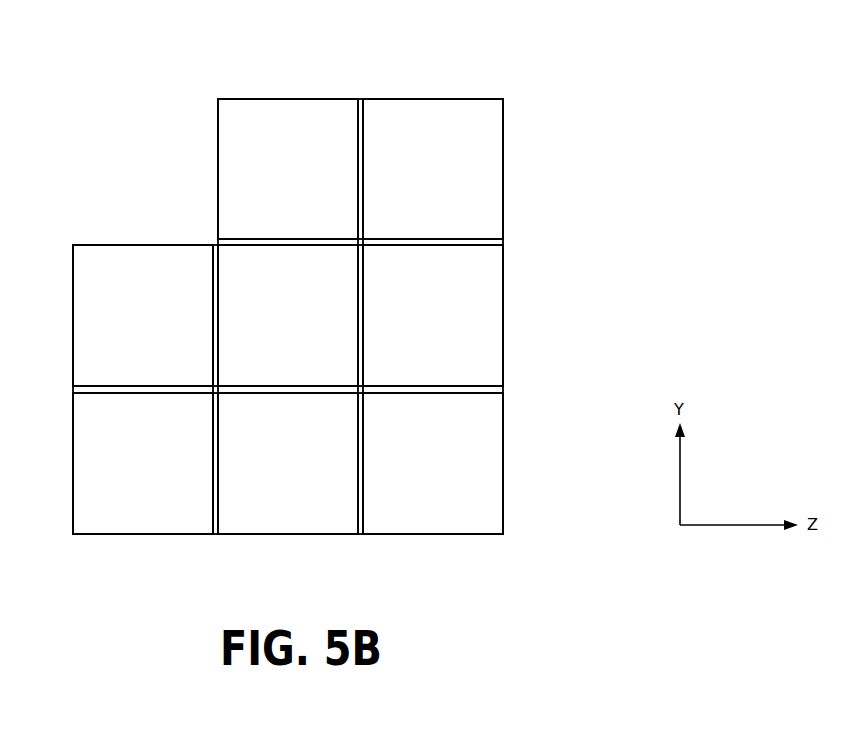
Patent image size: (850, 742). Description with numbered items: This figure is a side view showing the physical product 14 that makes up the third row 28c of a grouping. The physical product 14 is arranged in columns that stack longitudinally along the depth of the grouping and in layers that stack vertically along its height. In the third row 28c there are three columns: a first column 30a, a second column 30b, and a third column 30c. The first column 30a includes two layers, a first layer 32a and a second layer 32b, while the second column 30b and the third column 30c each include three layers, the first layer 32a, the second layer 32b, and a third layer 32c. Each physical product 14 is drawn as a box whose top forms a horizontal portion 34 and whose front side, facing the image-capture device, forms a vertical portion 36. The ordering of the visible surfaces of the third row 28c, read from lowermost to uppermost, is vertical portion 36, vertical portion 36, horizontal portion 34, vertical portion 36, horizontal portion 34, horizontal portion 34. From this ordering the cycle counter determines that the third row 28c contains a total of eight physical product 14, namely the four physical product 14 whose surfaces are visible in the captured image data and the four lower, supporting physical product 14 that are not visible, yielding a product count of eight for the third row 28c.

The physical product 14 is at (288, 285).
The third row 28c is at (92, 100).
The first column 30a is at (150, 548).
The second column 30b is at (295, 548).
The third column 30c is at (440, 548).
The first layer 32a is at (533, 457).
The second layer 32b is at (533, 337).
The third layer 32c is at (533, 197).
The horizontal portion 34 is at (297, 98).
The vertical portion 36 is at (218, 182).